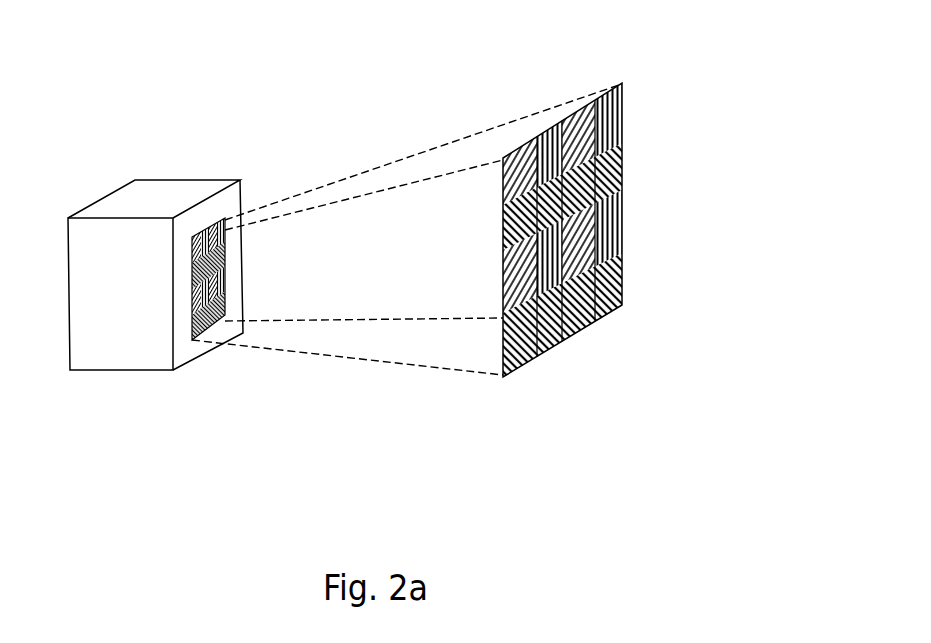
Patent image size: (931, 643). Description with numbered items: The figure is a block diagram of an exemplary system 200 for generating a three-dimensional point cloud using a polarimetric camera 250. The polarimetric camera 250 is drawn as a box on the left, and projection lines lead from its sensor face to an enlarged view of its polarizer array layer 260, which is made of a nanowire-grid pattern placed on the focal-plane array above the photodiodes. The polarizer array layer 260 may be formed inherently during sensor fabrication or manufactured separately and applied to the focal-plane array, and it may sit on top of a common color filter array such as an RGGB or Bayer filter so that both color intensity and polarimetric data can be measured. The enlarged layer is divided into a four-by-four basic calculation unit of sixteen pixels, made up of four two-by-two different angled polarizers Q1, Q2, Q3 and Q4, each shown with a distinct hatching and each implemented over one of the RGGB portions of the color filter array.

The system 200 is at (372, 27).
The polarimetric camera 250 is at (170, 168).
The polarizer array layer 260 is at (575, 265).
The first 2×2 different angled polarizer Q1 is at (488, 211).
The second 2×2 different angled polarizer Q2 is at (640, 142).
The third 2×2 different angled polarizer Q3 is at (640, 274).
The fourth 2×2 different angled polarizer Q4 is at (541, 376).